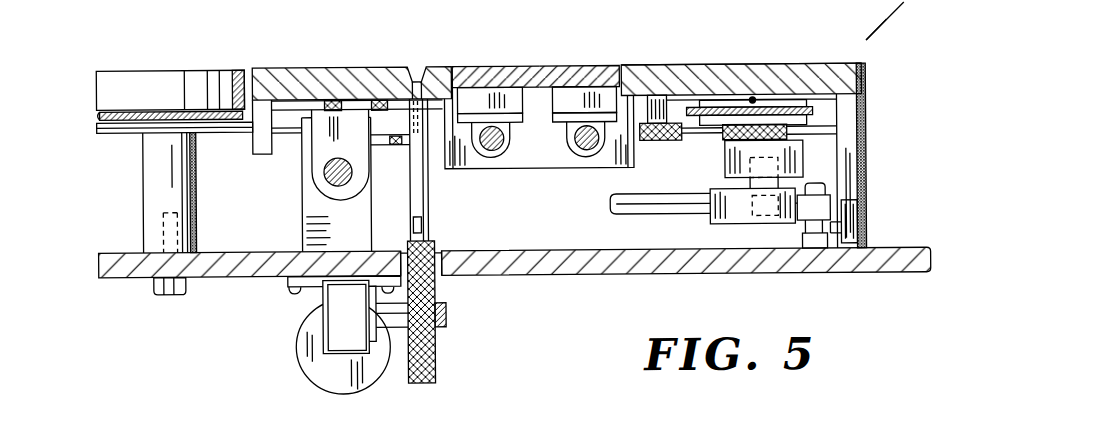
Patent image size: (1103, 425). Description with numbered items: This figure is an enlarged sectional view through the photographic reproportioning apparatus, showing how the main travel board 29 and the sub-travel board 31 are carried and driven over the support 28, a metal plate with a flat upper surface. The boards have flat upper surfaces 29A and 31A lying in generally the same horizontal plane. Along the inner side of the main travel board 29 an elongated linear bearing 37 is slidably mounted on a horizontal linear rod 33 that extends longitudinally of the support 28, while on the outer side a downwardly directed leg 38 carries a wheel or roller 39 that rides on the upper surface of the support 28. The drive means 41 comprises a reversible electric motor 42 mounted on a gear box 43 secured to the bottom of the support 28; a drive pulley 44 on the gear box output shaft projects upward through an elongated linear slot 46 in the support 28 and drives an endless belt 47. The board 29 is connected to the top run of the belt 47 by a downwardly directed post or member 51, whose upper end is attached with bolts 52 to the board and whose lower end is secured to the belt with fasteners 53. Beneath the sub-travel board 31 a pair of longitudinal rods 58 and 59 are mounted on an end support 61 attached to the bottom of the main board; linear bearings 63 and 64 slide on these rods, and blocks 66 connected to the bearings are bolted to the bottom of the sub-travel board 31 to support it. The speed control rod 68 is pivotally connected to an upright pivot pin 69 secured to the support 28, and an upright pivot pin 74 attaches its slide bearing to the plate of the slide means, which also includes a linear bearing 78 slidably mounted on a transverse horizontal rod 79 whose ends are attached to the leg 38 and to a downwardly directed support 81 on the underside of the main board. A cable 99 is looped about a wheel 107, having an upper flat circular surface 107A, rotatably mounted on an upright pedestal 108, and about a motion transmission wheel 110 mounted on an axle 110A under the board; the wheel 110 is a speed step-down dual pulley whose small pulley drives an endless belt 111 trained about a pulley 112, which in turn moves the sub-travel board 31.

The support 28 is at (892, 260).
The main travel board 29 is at (797, 64).
The upper surface of main travel board 29A is at (688, 63).
The sub-travel board 31 is at (503, 66).
The upper surface of sub-travel board 31A is at (590, 65).
The horizontal linear rod 33 is at (323, 178).
The linear bearing 37 is at (325, 150).
The leg 38 is at (850, 172).
The wheel or roller 39 is at (847, 222).
The drive means 41 is at (268, 352).
The reversible electric motor 42 is at (310, 325).
The gear box 43 is at (360, 320).
The drive pulley 44 is at (435, 352).
The elongated linear slot 46 is at (443, 250).
The endless belt 47 is at (435, 294).
The post or member 51 is at (429, 194).
The bolts 52 is at (417, 66).
The fasteners 53 is at (410, 228).
The longitudinal rod 58 is at (493, 150).
The longitudinal rod 59 is at (590, 160).
The end support 61 is at (552, 168).
The linear bearing 63 is at (508, 131).
The linear bearing 64 is at (586, 150).
The blocks 66 is at (553, 98).
The speed control rod 68 is at (690, 205).
The upright pivot pin 69 is at (811, 228).
The upright pivot pin 74 is at (760, 202).
The linear bearing 78 is at (803, 152).
The transverse horizontal rod 79 is at (395, 142).
The support 81 is at (260, 126).
The cable 99 is at (97, 108).
The wheel 107 is at (123, 82).
The upper flat circular surface 107A is at (195, 66).
The pedestal 108 is at (150, 184).
The motion transmission wheel 110 is at (803, 109).
The axle 110A is at (753, 101).
The endless belt 111 is at (700, 141).
The pulley 112 is at (650, 112).